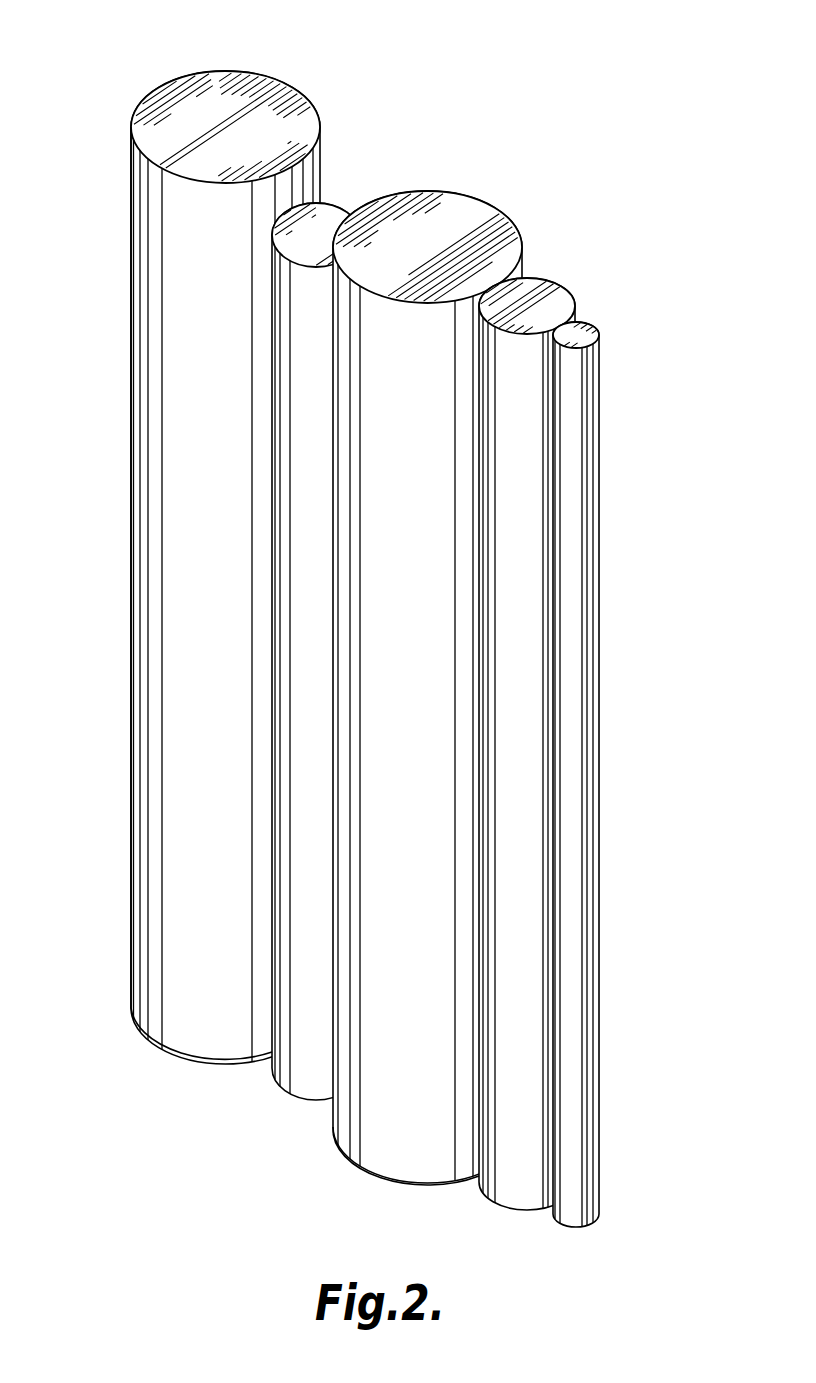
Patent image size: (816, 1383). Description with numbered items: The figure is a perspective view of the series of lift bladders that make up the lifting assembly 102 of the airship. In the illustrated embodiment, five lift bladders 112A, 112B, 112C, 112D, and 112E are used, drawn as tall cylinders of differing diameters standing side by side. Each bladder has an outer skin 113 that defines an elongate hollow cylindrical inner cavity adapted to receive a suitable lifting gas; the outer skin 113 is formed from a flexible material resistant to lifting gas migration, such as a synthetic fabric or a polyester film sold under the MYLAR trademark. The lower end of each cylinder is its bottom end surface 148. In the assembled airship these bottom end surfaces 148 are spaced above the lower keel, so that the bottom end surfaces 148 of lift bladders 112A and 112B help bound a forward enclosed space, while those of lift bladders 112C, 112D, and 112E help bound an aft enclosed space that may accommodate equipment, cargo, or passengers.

The lifting assembly 102 is at (386, 641).
The lift bladder 112A is at (263, 76).
The lift bladder 112B is at (337, 215).
The lift bladder 112C is at (465, 207).
The lift bladder 112D is at (555, 300).
The lift bladder 112E is at (593, 327).
The outer skin 113 is at (131, 163).
The bottom end surface 148 is at (188, 1061).